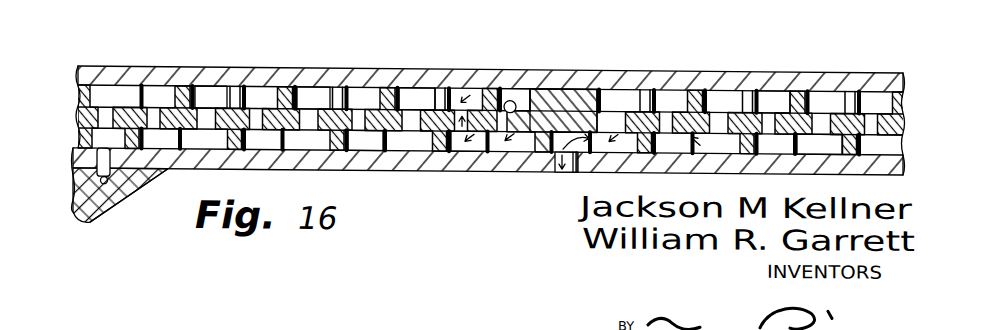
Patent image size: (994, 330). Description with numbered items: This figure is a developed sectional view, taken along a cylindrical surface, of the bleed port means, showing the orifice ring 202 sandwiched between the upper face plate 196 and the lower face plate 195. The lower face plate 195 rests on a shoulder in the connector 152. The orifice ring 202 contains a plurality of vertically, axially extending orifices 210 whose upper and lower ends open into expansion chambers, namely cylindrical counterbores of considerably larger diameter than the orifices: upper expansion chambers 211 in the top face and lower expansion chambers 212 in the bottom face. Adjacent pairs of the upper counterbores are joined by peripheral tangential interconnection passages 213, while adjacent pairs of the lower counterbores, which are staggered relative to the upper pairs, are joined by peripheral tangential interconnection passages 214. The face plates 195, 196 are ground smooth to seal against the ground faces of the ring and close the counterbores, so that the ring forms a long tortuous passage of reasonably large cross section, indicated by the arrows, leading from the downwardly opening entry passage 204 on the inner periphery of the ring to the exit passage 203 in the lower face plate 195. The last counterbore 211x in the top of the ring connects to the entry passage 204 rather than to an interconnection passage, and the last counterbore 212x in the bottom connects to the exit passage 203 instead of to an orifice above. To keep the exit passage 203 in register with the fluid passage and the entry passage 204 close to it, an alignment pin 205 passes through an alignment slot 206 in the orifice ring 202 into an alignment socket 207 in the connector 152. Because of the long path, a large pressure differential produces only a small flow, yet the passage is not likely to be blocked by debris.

The connector 152 is at (95, 210).
The lower face plate 195 is at (428, 169).
The upper face plate 196 is at (132, 77).
The orifice ring 202 is at (561, 78).
The exit passage 203 is at (553, 159).
The entry passage 204 is at (507, 97).
The alignment pin 205 is at (73, 213).
The alignment slot 206 is at (140, 172).
The alignment socket 207 is at (107, 184).
The orifices 210 is at (210, 106).
The upper expansion chambers 211 is at (417, 90).
The last upper counterbore 211x is at (519, 86).
The lower expansion chambers 212 is at (362, 137).
The last lower counterbore 212x is at (573, 168).
The upper interconnection passages 213 is at (232, 98).
The lower interconnection passages 214 is at (468, 137).